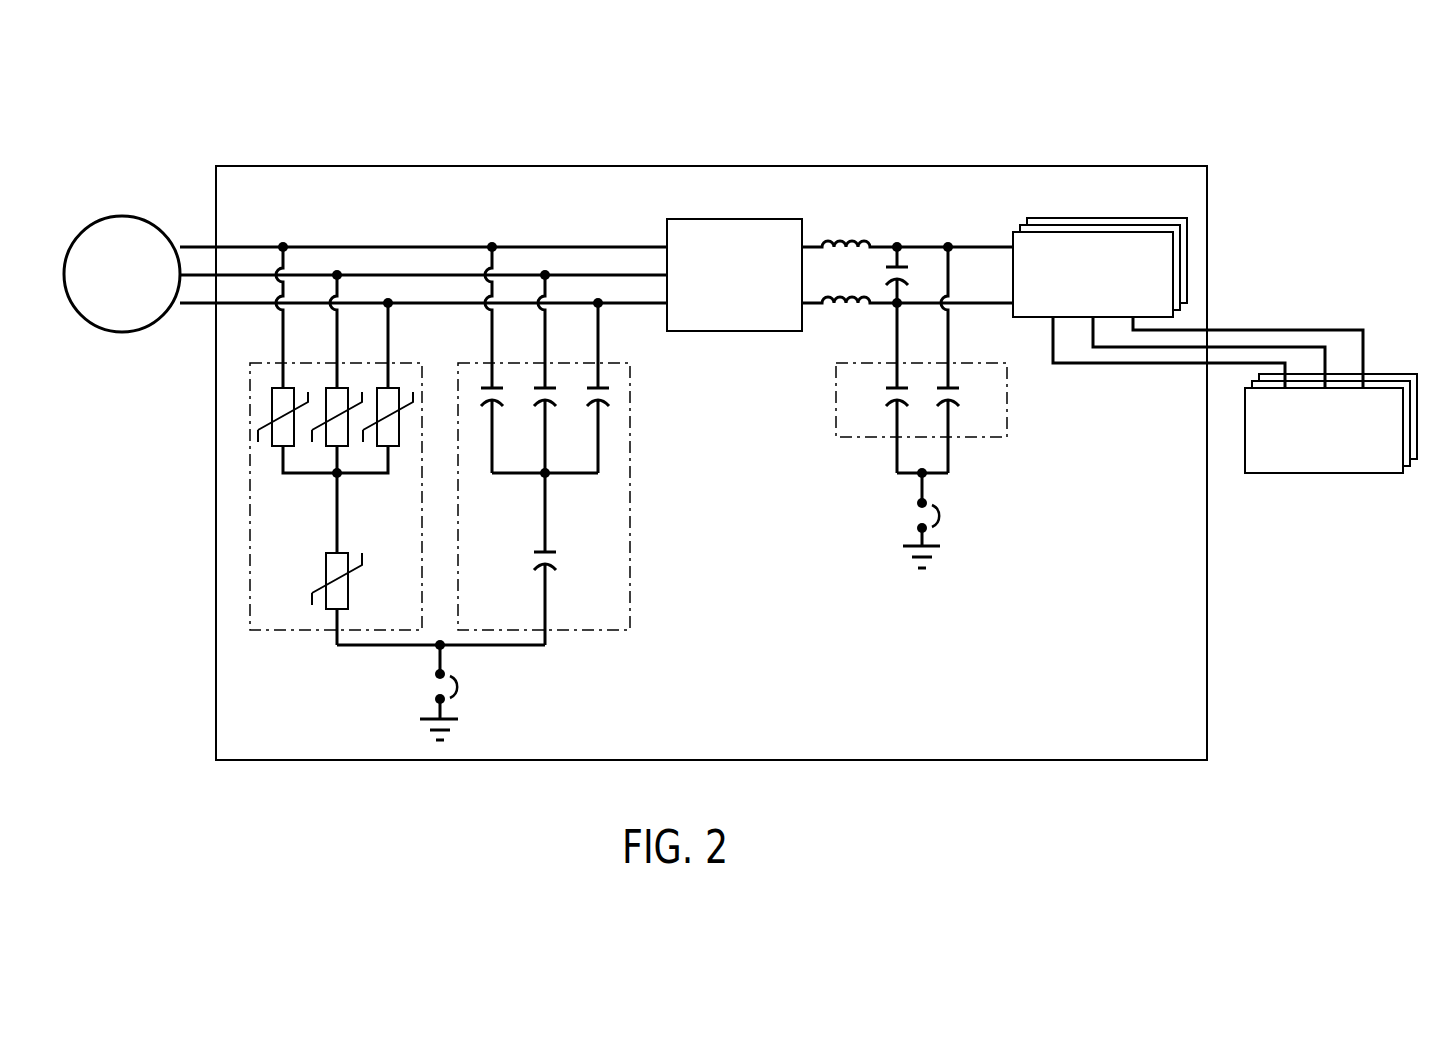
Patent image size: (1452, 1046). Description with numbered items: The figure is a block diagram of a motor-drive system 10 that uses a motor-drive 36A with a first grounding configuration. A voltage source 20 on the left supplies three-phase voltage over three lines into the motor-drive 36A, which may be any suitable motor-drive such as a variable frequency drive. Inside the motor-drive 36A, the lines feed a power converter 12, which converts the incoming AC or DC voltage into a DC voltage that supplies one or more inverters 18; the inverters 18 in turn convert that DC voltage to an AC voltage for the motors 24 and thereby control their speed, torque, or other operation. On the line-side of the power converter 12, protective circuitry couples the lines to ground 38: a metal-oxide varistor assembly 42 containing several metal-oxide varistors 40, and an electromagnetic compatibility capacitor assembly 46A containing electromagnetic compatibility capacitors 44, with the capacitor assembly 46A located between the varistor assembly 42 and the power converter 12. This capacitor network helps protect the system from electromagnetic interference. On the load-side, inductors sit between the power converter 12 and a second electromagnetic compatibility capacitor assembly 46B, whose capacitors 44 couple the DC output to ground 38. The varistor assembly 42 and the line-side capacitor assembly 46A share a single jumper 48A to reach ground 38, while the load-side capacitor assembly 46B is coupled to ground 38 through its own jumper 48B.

The motor-drive system 10 is at (1076, 103).
The power converter 12 is at (702, 219).
The inverters 18 is at (1033, 318).
The voltage source 20 is at (107, 218).
The motors 24 is at (1385, 475).
The motor-drive 36A is at (445, 165).
The ground 38 is at (457, 734).
The metal-oxide varistors 40 is at (275, 447).
The metal-oxide varistor assembly 42 is at (293, 632).
The electromagnetic compatibility capacitors 44 is at (605, 390).
The electromagnetic compatibility capacitor assembly 46A is at (632, 497).
The electromagnetic compatibility capacitor assembly 46B is at (1007, 400).
The jumper 48A is at (467, 687).
The jumper 48B is at (949, 516).